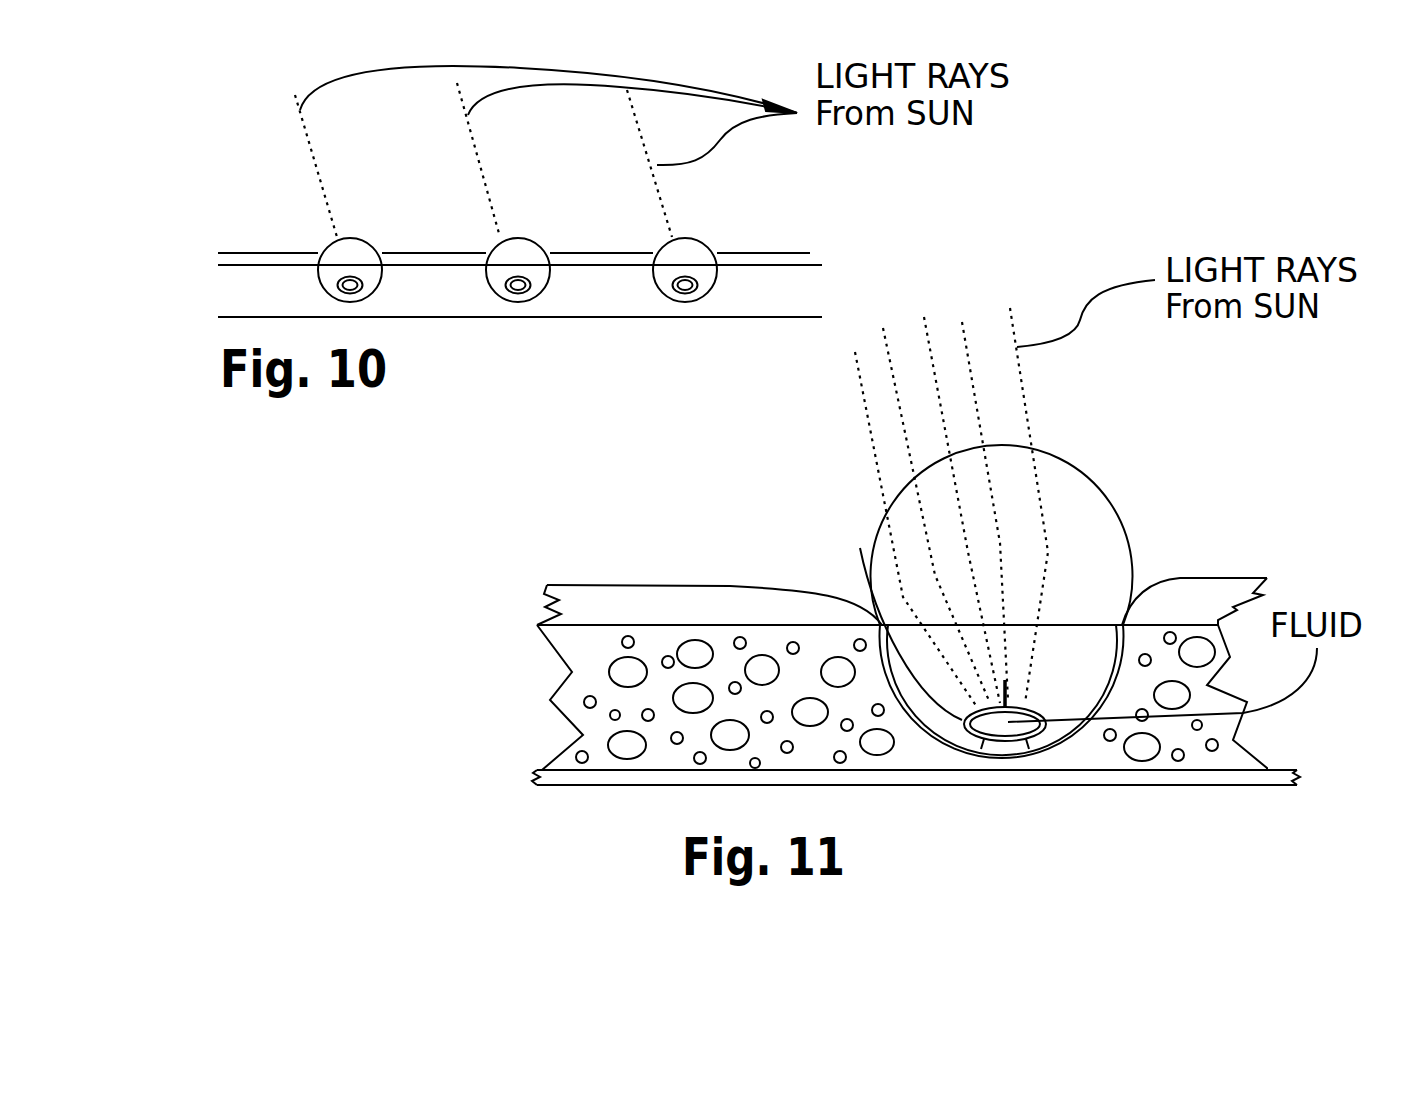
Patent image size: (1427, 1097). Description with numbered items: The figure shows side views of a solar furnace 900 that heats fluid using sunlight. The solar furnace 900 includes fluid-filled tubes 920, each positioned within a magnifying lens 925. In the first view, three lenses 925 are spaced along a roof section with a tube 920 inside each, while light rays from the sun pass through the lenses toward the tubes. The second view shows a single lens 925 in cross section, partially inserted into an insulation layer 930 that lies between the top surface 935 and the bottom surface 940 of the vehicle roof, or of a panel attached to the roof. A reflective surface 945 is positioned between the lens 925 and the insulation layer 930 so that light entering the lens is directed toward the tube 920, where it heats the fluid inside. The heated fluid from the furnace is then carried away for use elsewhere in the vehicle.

In FIG. 10, the solar furnace 900 is at (797, 298).
In FIG. 11, the solar furnace 900 is at (902, 800).
In FIG. 10, the fluid-filled tube 920 is at (350, 294).
In FIG. 11, the fluid-filled tube 920 is at (890, 610).
In FIG. 10, the magnifying lens 925 is at (663, 243).
In FIG. 11, the magnifying lens 925 is at (1063, 587).
In FIG. 11, the insulation layer 930 is at (680, 722).
In FIG. 11, the top surface 935 is at (588, 583).
In FIG. 11, the bottom surface 940 is at (662, 772).
In FIG. 11, the reflective surface 945 is at (1103, 673).